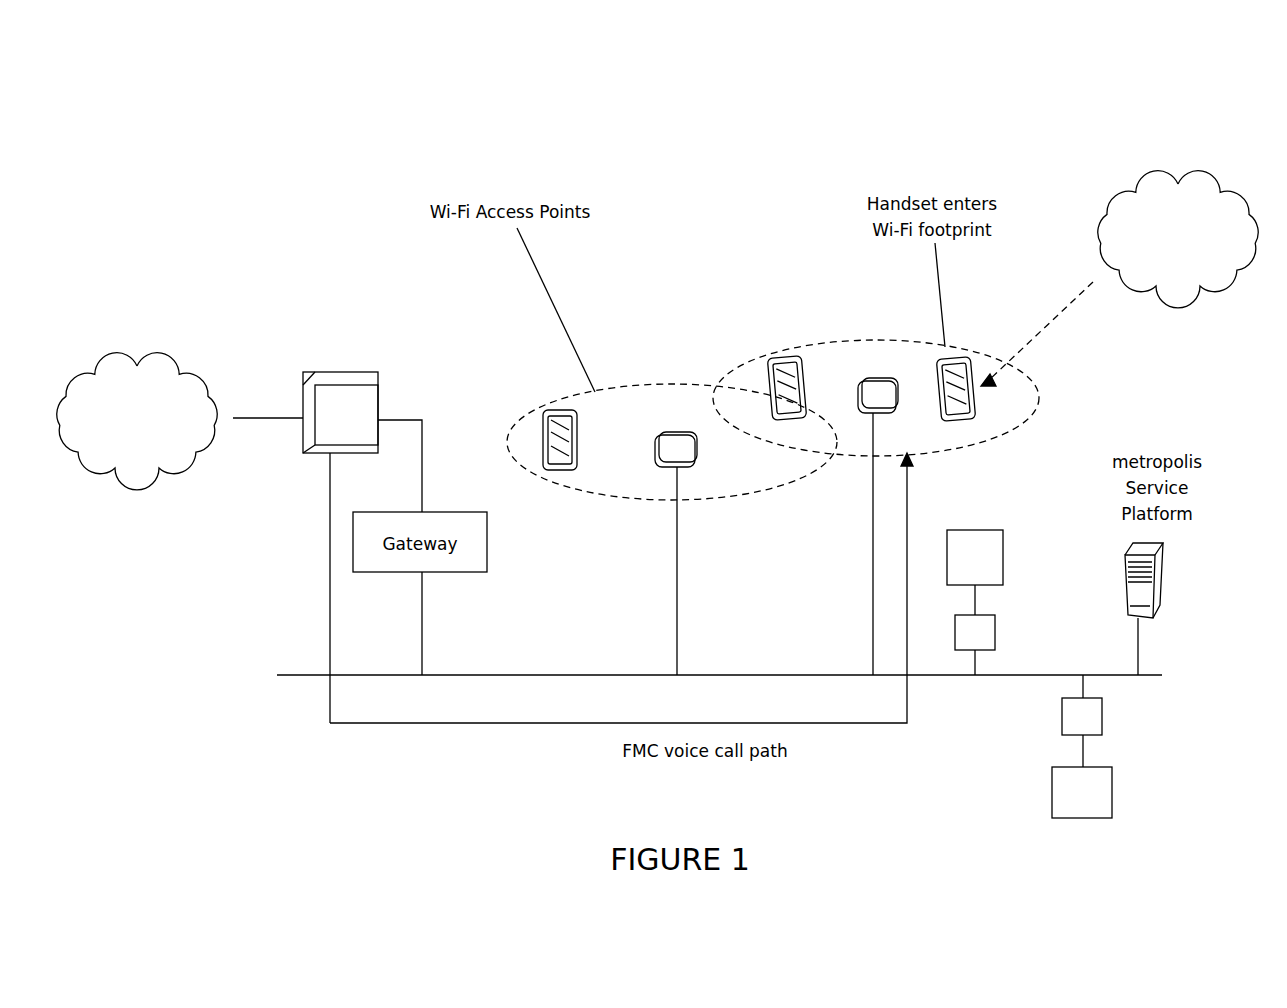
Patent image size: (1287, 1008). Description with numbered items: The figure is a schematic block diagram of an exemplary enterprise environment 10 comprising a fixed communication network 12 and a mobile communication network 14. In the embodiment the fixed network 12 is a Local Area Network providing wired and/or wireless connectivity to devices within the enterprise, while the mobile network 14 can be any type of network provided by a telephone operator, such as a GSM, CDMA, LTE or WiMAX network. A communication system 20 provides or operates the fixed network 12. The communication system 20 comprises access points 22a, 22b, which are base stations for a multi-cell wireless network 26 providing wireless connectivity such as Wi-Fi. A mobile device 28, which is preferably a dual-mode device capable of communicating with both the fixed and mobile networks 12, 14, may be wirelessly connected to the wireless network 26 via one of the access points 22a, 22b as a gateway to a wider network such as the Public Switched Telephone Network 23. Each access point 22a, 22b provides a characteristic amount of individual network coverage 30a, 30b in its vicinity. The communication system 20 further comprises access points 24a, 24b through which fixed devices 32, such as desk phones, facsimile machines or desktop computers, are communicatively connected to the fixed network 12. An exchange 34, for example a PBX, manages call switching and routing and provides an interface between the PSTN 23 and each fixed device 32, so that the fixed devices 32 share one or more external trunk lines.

The enterprise environment 10 is at (896, 111).
The fixed communication network 12 is at (725, 498).
The mobile communication network 14 is at (1175, 162).
The communication system 20 is at (367, 160).
The access point 22a is at (680, 432).
The access point 22b is at (884, 380).
The Public Switched Telephone Network 23 is at (122, 360).
The access point 24a is at (983, 635).
The access point 24b is at (1088, 714).
The multi-cell wireless network 26 is at (600, 387).
The mobile device 28 is at (553, 410).
The network coverage 30a is at (800, 474).
The network coverage 30b is at (1002, 433).
The fixed device 32 is at (988, 558).
The exchange 34 is at (370, 371).